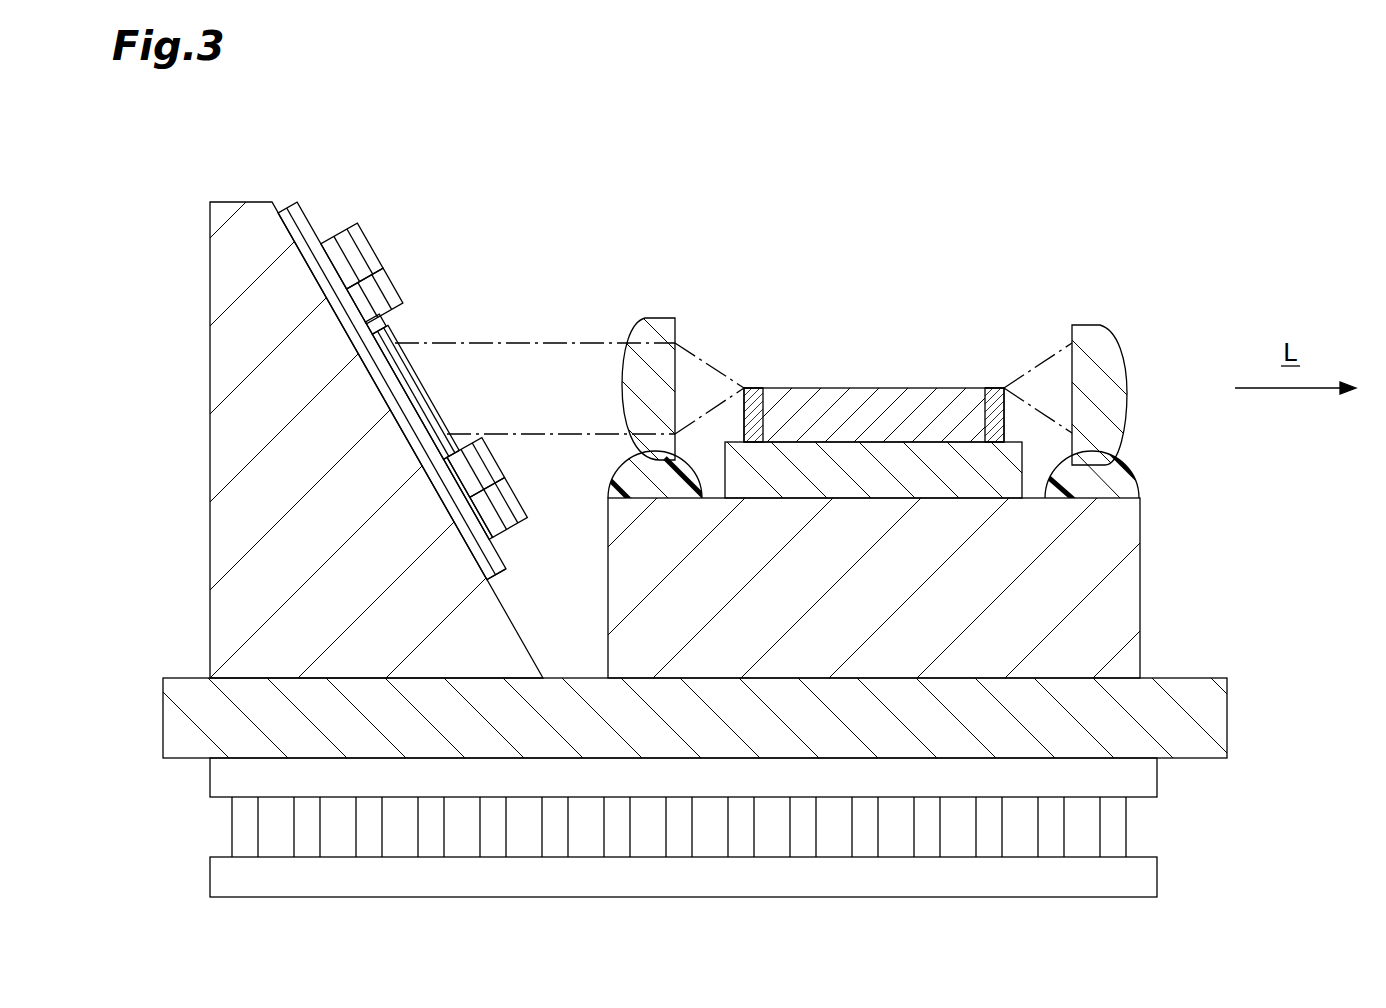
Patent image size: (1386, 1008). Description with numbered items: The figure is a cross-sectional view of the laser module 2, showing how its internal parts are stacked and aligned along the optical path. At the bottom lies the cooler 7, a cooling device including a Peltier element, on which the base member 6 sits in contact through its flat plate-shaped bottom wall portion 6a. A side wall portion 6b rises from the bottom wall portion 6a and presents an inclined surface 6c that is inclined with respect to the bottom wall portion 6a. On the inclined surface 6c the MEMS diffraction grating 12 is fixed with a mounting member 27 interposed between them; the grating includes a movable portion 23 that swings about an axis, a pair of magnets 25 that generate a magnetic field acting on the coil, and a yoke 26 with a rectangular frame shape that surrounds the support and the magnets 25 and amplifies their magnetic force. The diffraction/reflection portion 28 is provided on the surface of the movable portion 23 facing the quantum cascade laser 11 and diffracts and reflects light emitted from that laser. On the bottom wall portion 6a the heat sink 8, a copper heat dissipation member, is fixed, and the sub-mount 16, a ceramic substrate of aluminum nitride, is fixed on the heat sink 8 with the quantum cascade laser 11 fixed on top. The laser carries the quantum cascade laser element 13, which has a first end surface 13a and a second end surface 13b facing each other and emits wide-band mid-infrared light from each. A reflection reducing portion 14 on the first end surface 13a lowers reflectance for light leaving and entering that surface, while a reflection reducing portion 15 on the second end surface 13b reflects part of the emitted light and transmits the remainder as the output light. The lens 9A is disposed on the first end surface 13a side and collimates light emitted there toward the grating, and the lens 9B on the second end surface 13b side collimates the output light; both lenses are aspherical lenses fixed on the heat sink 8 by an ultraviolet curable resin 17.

The laser module 2 is at (1032, 222).
The base member 6 is at (714, 427).
The bottom wall portion 6a is at (1215, 703).
The side wall portion 6b is at (222, 368).
The inclined surface 6c is at (312, 218).
The cooler 7 is at (1160, 872).
The heat sink 8 is at (1128, 586).
The lens 9A is at (655, 322).
The lens 9B is at (1093, 326).
The quantum cascade laser 11 is at (873, 368).
The MEMS diffraction grating 12 is at (456, 371).
The quantum cascade laser element 13 is at (907, 388).
The first end surface 13a is at (762, 388).
The second end surface 13b is at (990, 388).
The reflection reducing portion 14 is at (750, 388).
The reflection reducing portion 15 is at (996, 388).
The sub-mount 16 is at (968, 491).
The ultraviolet curable resin 17 is at (1135, 462).
The movable portion 23 is at (385, 328).
The magnet 25 is at (399, 262).
The yoke 26 is at (372, 237).
The mounting member 27 is at (508, 572).
The diffraction/reflection portion 28 is at (438, 390).